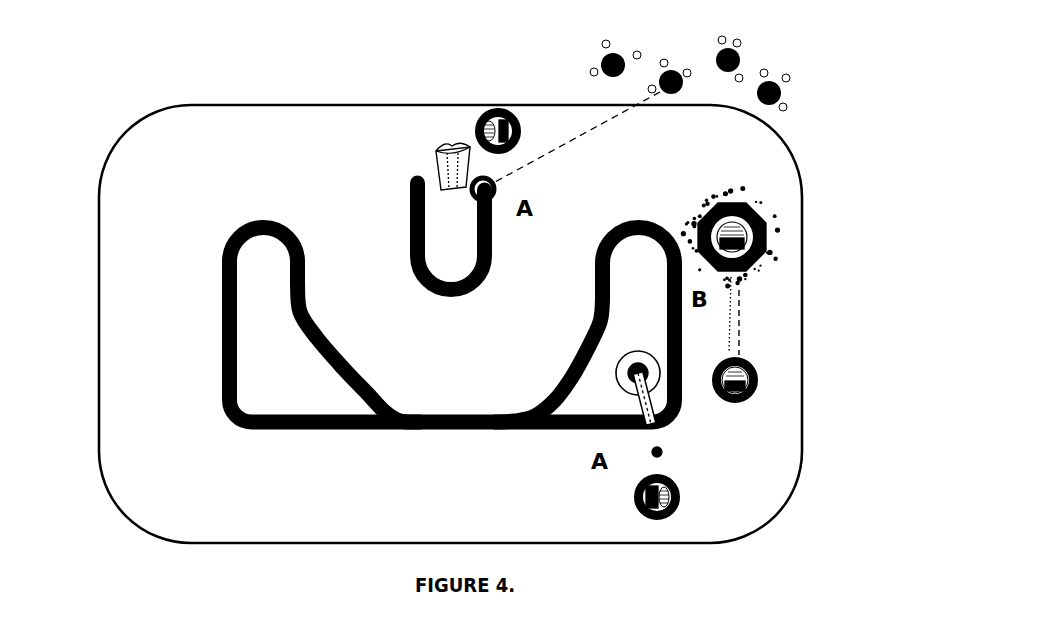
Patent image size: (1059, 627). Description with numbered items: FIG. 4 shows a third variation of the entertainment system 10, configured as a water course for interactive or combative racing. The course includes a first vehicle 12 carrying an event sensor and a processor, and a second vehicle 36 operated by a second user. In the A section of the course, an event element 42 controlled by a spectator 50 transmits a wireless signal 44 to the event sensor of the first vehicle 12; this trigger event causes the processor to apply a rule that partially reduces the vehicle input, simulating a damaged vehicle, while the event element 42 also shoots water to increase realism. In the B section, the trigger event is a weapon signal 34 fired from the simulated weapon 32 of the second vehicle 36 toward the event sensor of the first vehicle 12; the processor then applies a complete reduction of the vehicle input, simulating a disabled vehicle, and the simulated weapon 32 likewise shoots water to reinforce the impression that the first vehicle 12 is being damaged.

The entertainment system 10 is at (140, 90).
The first vehicle 12 is at (494, 110).
The simulated weapon 32 is at (737, 355).
The weapon signal 34 is at (735, 288).
The second vehicle 36 is at (766, 209).
The event element 42 is at (485, 168).
The wireless signal 44 is at (670, 452).
The spectator 50 is at (755, 51).